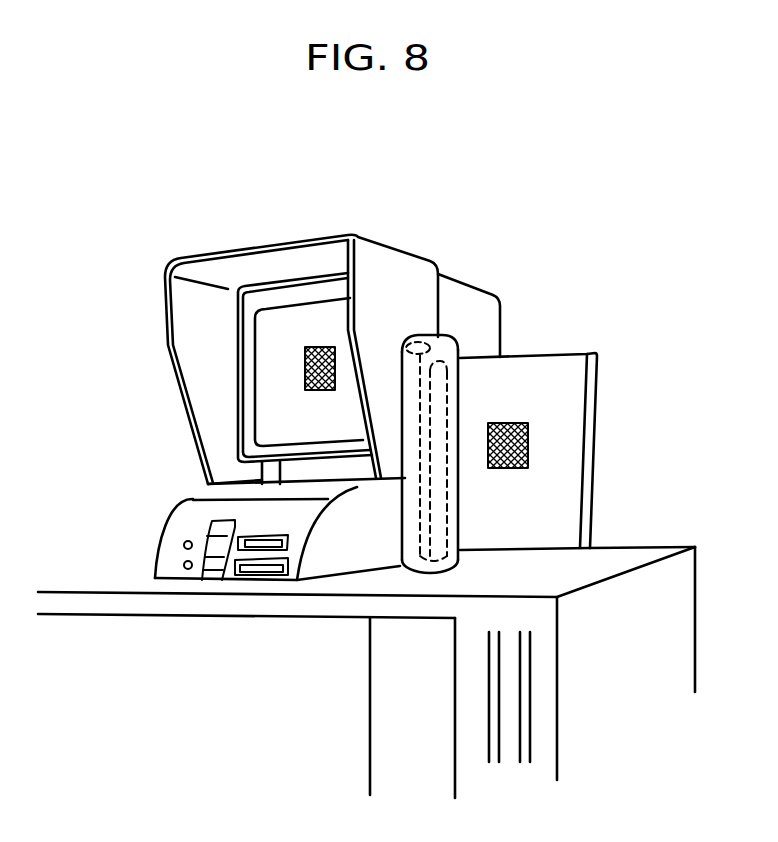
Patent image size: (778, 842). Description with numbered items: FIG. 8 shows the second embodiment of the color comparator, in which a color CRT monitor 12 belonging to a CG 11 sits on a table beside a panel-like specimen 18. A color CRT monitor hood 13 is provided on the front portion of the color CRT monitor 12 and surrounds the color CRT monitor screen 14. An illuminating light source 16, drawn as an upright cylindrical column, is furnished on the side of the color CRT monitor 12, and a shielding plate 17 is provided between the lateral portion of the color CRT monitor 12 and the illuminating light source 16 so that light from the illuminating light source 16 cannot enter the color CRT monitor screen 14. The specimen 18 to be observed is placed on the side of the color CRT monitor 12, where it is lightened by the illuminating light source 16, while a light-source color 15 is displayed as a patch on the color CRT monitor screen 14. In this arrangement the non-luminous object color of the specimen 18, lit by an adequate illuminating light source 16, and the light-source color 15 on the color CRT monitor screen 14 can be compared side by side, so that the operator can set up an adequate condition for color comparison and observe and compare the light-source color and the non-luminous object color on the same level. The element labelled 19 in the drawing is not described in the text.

The CG 11 is at (455, 280).
The color CRT monitor 12 is at (482, 313).
The color CRT monitor hood 13 is at (187, 293).
The color CRT monitor screen 14 is at (277, 408).
The light-source color 15 is at (305, 370).
The illuminating light source 16 is at (417, 507).
The shielding plate 17 is at (440, 387).
The specimen 18 is at (527, 460).
The panel 19 is at (572, 447).